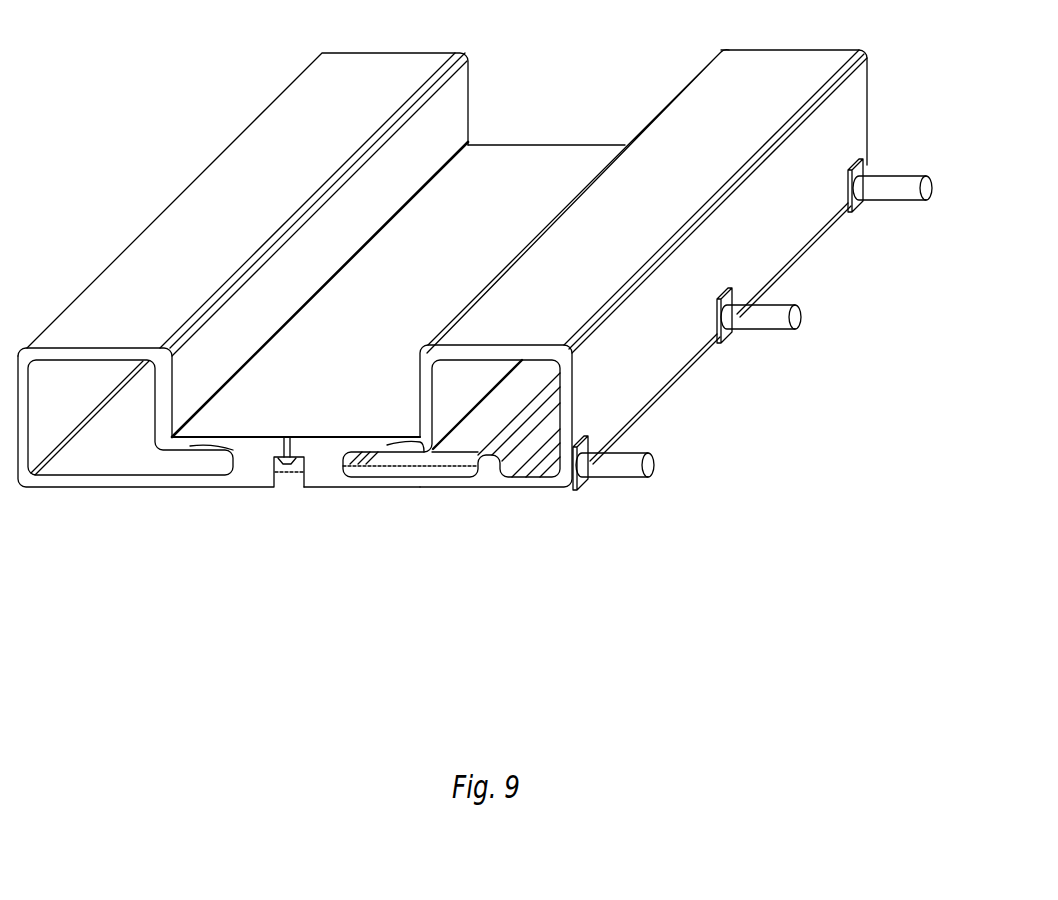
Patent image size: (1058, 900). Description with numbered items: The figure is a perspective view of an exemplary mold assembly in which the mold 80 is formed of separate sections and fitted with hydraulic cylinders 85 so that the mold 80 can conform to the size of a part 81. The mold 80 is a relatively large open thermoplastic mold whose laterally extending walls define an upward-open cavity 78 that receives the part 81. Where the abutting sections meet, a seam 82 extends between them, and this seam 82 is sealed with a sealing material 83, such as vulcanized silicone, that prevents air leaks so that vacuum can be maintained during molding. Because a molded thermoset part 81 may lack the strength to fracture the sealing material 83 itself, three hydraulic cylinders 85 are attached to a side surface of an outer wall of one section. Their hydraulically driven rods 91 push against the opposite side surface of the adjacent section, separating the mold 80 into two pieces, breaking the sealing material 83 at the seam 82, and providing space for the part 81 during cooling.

The cavity 78 is at (540, 92).
The mold 80 is at (130, 480).
The part 81 is at (312, 379).
The seam 82 is at (289, 451).
The sealing material 83 is at (292, 461).
The hydraulic cylinder 85 is at (887, 188).
The rods 91 is at (368, 464).